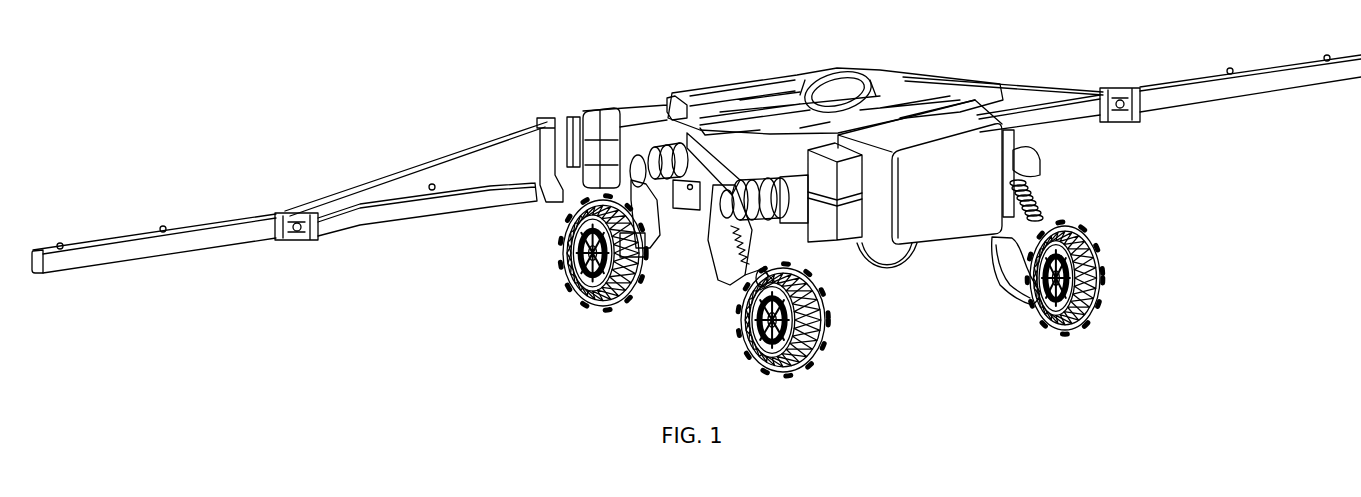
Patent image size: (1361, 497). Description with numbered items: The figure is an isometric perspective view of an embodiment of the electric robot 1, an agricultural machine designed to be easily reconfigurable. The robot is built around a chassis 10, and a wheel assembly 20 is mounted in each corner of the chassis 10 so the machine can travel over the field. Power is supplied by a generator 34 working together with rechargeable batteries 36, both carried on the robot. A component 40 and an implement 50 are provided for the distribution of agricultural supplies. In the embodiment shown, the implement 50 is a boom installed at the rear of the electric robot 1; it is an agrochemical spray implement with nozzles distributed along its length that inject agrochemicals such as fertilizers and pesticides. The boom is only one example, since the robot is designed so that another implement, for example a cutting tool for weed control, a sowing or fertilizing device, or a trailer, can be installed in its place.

The electric robot 1 is at (498, 107).
The chassis 10 is at (790, 200).
The wheel assembly 20 is at (717, 265).
The generator 34 is at (967, 205).
The rechargeable batteries 36 is at (848, 227).
The component 40 is at (907, 107).
The implement 50 is at (592, 120).